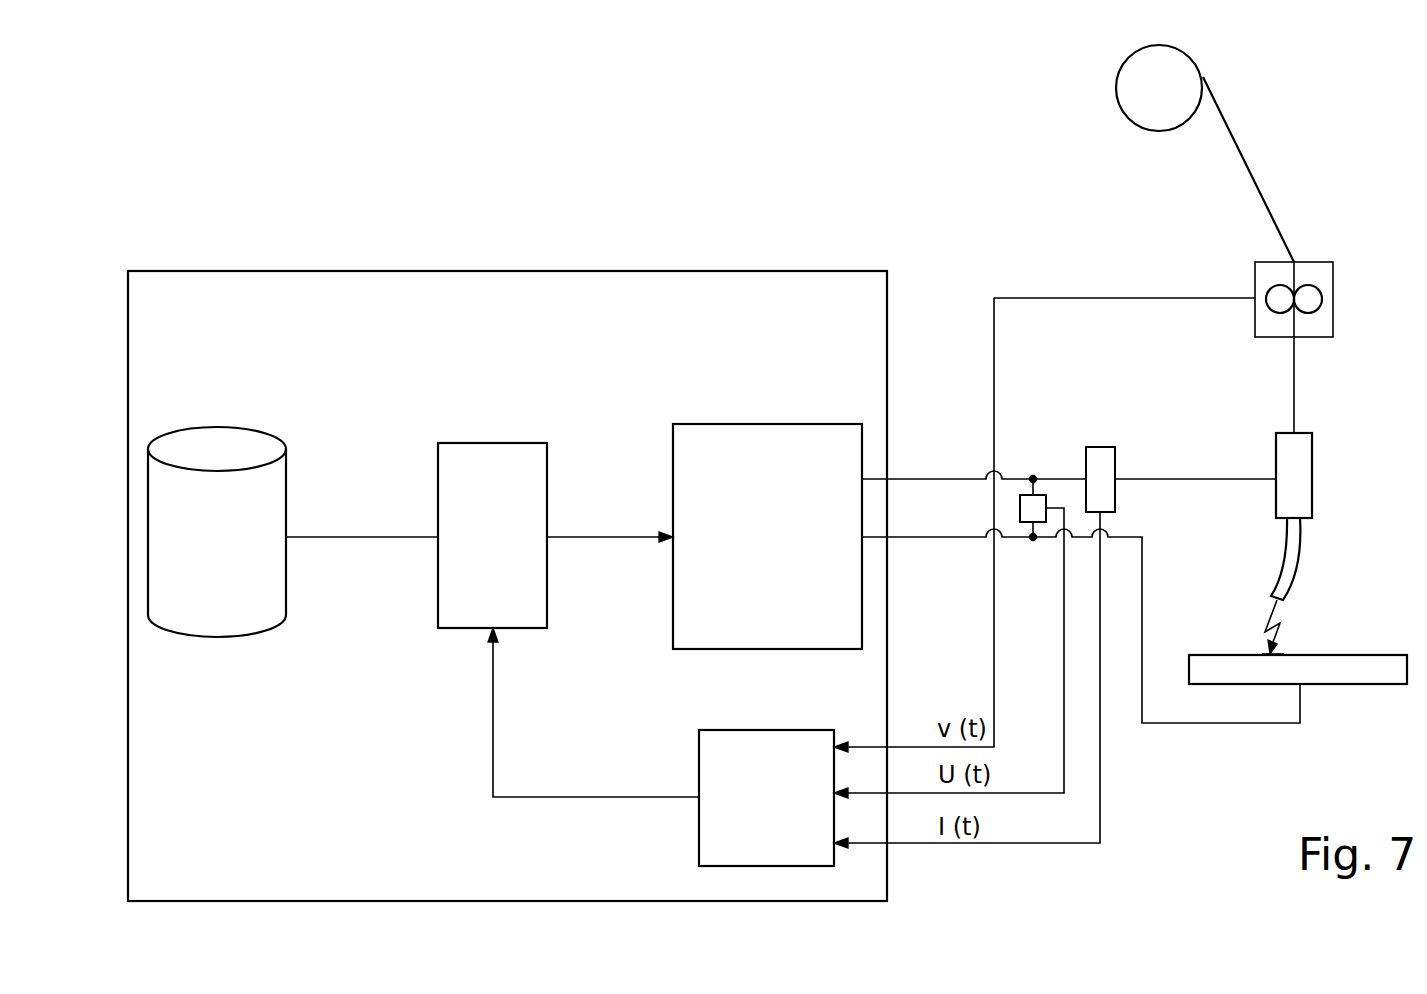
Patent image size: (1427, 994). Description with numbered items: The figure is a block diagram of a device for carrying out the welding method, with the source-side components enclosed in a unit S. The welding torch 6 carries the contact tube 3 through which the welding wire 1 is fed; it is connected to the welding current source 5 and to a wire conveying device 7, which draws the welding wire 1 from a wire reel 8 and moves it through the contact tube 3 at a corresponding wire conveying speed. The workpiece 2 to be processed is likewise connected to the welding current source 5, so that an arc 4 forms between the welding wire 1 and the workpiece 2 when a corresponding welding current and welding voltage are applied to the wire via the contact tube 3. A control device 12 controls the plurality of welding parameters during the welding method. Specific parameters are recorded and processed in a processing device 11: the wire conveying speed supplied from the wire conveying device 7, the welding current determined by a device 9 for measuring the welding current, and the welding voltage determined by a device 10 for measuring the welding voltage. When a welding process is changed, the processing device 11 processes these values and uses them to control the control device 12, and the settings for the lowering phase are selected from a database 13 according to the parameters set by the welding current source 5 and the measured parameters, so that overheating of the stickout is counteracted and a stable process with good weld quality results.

The welding wire 1 is at (1273, 607).
The workpiece 2 is at (1357, 685).
The contact tube 3 is at (1302, 548).
The arc 4 is at (1277, 637).
The welding current source 5 is at (728, 457).
The welding torch 6 is at (1293, 487).
The wire conveying device 7 is at (1333, 298).
The wire reel 8 is at (1130, 122).
The device for measuring the welding current 9 is at (1102, 447).
The device for measuring the welding voltage 10 is at (1047, 495).
The processing device 11 is at (743, 818).
The control device 12 is at (490, 510).
The database 13 is at (217, 448).
The welding system S is at (615, 300).